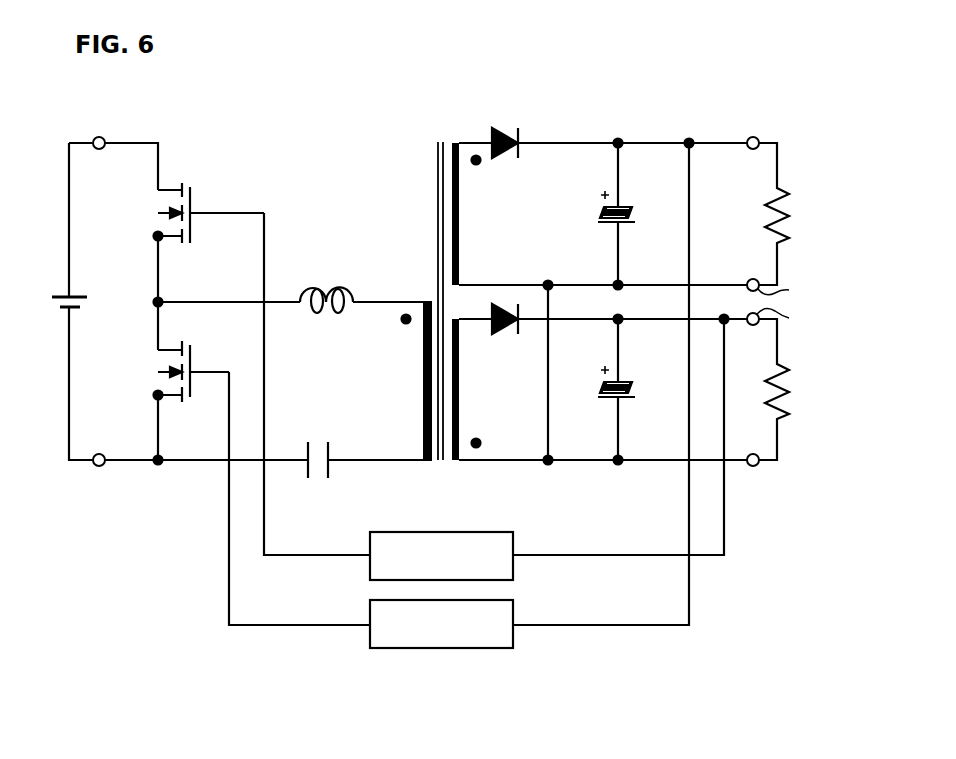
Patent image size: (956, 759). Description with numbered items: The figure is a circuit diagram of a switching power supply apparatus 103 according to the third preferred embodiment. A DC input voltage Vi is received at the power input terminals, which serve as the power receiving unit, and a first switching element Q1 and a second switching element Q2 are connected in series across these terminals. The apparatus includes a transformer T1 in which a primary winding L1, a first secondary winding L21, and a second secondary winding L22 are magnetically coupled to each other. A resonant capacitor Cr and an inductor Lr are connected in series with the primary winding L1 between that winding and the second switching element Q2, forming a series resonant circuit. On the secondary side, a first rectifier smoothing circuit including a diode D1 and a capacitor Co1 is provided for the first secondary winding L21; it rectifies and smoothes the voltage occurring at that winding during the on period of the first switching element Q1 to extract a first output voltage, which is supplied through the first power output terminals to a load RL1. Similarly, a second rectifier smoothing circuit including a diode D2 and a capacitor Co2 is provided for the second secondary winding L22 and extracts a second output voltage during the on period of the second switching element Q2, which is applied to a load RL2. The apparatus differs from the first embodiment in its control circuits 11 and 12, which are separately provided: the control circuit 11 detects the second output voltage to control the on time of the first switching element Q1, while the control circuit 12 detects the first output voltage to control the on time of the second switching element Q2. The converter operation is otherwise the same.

The switching power supply apparatus 103 is at (811, 65).
The control circuit 11 is at (511, 532).
The control circuit 12 is at (511, 600).
The first switching element Q1 is at (194, 213).
The second switching element Q2 is at (176, 371).
The inductor Lr is at (326, 287).
The resonant capacitor Cr is at (370, 446).
The transformer T1 is at (445, 274).
The primary winding L1 is at (411, 381).
The first secondary winding L21 is at (476, 214).
The second secondary winding L22 is at (476, 389).
The diode D1 is at (505, 130).
The diode D2 is at (505, 333).
The capacitor Co1 is at (635, 208).
The capacitor Co2 is at (635, 384).
The load RL1 is at (793, 214).
The load RL2 is at (793, 389).
The DC input voltage Vi is at (57, 301).